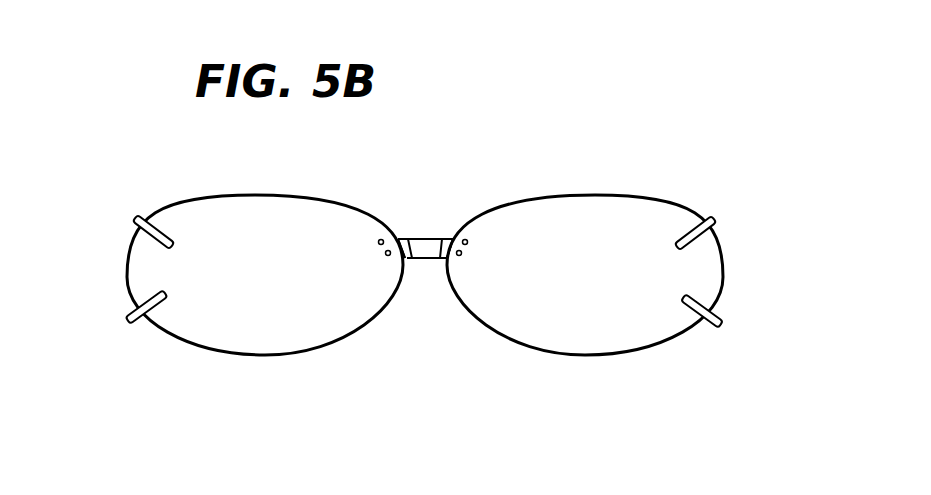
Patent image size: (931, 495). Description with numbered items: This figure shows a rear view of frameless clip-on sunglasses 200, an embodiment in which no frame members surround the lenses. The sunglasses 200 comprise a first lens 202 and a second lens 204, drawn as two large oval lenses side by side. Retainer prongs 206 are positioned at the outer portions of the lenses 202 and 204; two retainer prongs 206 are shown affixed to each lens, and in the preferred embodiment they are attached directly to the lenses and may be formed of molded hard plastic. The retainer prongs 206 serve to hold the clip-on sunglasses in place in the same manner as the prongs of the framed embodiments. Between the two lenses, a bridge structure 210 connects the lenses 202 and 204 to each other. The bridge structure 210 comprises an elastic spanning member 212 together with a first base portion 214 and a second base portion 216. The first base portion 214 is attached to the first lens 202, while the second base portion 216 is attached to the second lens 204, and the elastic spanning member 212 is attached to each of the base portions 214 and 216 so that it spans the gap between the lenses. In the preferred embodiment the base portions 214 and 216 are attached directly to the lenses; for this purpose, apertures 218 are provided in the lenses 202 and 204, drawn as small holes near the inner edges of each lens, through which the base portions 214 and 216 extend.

The frameless clip-on sunglasses 200 is at (705, 128).
The first lens 202 is at (612, 312).
The second lens 204 is at (293, 312).
The retainer prongs 206 is at (137, 218).
The bridge structure 210 is at (427, 308).
The elastic spanning member 212 is at (427, 238).
The first base portion 214 is at (451, 238).
The second base portion 216 is at (399, 238).
The apertures 218 is at (380, 245).